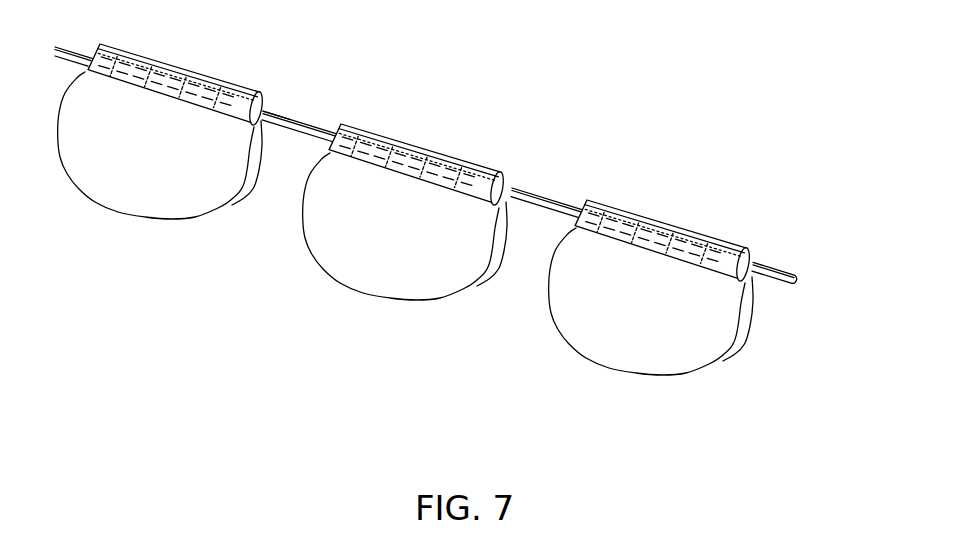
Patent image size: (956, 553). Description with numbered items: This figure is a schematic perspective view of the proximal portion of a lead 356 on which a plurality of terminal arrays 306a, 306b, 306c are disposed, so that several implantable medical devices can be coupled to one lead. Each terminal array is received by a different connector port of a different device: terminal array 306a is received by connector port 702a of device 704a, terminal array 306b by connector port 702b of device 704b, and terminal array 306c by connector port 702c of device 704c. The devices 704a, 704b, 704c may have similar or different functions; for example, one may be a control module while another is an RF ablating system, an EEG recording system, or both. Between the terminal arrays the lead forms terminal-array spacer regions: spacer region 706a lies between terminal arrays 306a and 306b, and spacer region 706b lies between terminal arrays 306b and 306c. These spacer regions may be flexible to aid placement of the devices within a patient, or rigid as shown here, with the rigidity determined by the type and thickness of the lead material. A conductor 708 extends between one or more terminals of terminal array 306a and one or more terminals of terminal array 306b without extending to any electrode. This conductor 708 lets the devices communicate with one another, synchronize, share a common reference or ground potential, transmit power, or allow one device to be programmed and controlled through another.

The terminal array 306a is at (169, 63).
The terminal array 306b is at (414, 143).
The terminal array 306c is at (659, 220).
The connector port 702a is at (260, 106).
The connector port 702b is at (506, 188).
The connector port 702c is at (752, 258).
The device 704a is at (140, 218).
The device 704b is at (417, 300).
The device 704c is at (695, 373).
The terminal-array spacer region 706a is at (289, 115).
The terminal-array spacer region 706b is at (529, 190).
The conductor 708 is at (283, 126).
The lead 356 is at (781, 271).